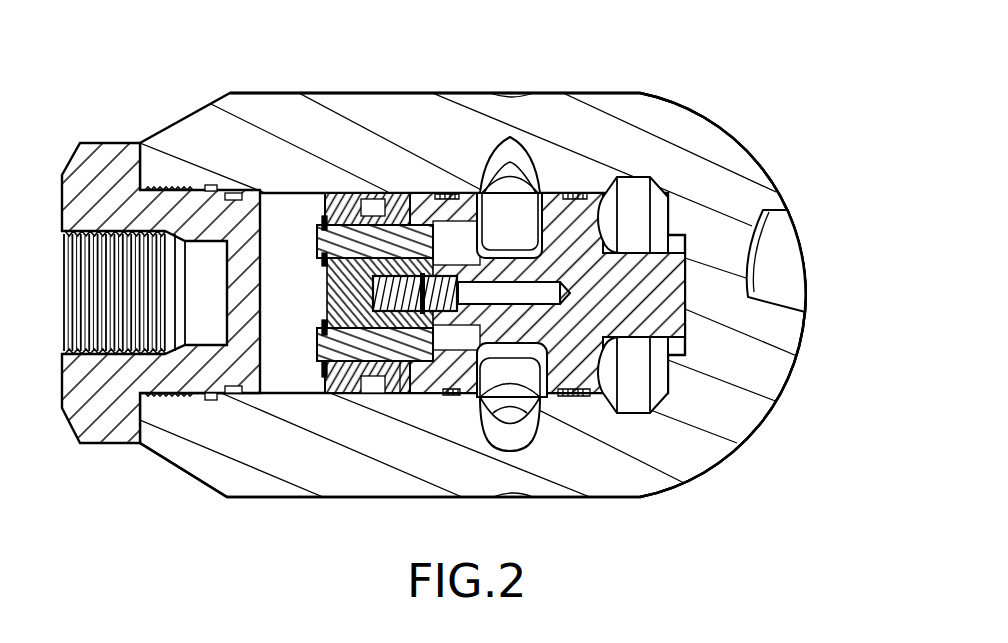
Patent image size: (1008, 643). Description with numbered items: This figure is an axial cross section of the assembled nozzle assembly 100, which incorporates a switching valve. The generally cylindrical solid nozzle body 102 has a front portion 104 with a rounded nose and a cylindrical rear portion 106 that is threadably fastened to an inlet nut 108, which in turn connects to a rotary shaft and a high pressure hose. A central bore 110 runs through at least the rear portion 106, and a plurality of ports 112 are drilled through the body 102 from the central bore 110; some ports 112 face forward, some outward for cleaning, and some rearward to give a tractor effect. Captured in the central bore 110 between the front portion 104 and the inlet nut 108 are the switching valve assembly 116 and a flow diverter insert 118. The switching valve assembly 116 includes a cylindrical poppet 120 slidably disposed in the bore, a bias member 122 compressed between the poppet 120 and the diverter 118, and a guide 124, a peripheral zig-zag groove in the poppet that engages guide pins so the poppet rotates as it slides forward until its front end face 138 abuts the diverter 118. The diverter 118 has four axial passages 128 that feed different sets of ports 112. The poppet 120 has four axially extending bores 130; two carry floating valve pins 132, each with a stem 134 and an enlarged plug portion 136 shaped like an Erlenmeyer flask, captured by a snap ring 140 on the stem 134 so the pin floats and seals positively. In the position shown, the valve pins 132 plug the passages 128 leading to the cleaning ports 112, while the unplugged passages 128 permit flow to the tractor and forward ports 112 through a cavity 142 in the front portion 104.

The nozzle assembly 100 is at (775, 443).
The nozzle body 102 is at (725, 120).
The front portion 104 is at (710, 172).
The rear portion 106 is at (466, 103).
The inlet nut 108 is at (113, 160).
The central bore 110 is at (275, 197).
The ports 112 is at (535, 174).
The switching valve assembly 116 is at (417, 402).
The flow diverter insert 118 is at (660, 325).
The poppet 120 is at (407, 192).
The bias member 122 is at (470, 278).
The guide 124 is at (390, 185).
The axial passages 128 is at (452, 237).
The axially extending bores 130 is at (353, 190).
The valve pins 132 is at (349, 311).
The stem 134 is at (343, 365).
The enlarged plug portion 136 is at (430, 330).
The front end face 138 is at (402, 405).
The snap ring 140 is at (323, 262).
The cavity 142 is at (643, 390).